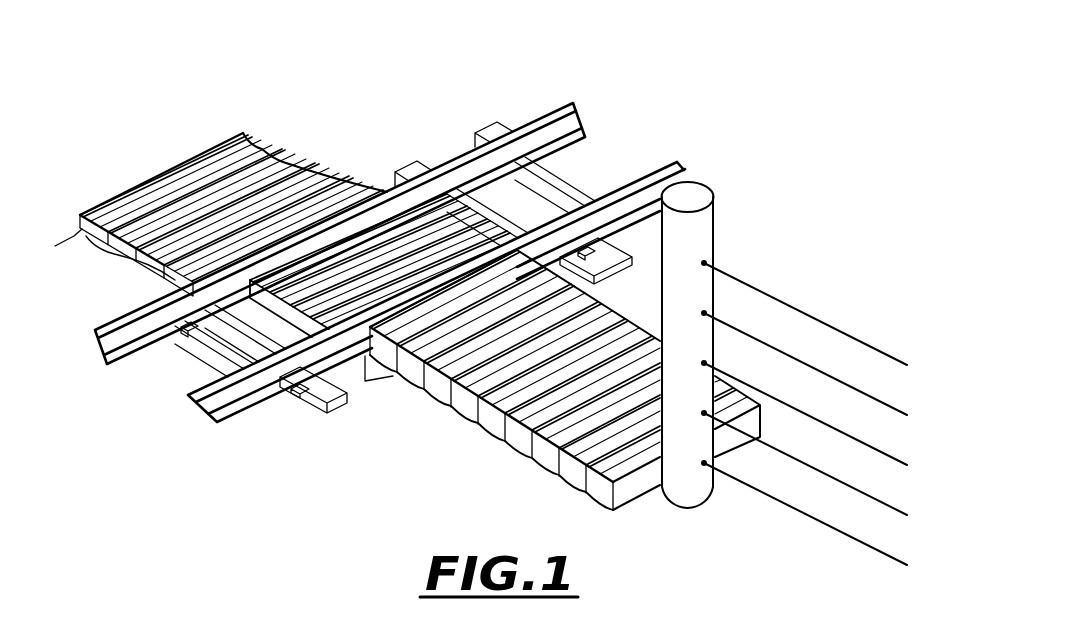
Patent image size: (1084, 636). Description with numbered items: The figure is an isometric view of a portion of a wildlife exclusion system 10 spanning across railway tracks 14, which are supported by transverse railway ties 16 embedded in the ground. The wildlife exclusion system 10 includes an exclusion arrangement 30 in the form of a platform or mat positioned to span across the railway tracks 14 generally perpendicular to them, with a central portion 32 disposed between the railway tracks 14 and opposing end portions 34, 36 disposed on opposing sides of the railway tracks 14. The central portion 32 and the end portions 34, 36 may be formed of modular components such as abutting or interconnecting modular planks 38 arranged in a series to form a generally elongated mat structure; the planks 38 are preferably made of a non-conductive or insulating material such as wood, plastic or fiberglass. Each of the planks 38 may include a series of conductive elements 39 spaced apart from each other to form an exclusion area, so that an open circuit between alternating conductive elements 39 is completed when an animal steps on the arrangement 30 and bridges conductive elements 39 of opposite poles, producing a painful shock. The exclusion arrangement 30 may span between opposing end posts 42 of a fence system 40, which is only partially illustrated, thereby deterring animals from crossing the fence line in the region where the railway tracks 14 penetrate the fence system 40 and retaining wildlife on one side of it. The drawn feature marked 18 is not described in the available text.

The wildlife exclusion system 10 is at (691, 74).
The railway tracks 14 is at (556, 122).
The railway ties 16 is at (482, 128).
The panel board ends 18 is at (561, 480).
The exclusion arrangement 30 is at (229, 76).
The central portion 32 is at (228, 292).
The end portion 34 is at (348, 136).
The end portion 36 is at (451, 491).
The modular planks 38 is at (264, 152).
The conductive elements 39 is at (600, 345).
The fence system 40 is at (849, 252).
The end posts 42 is at (713, 241).